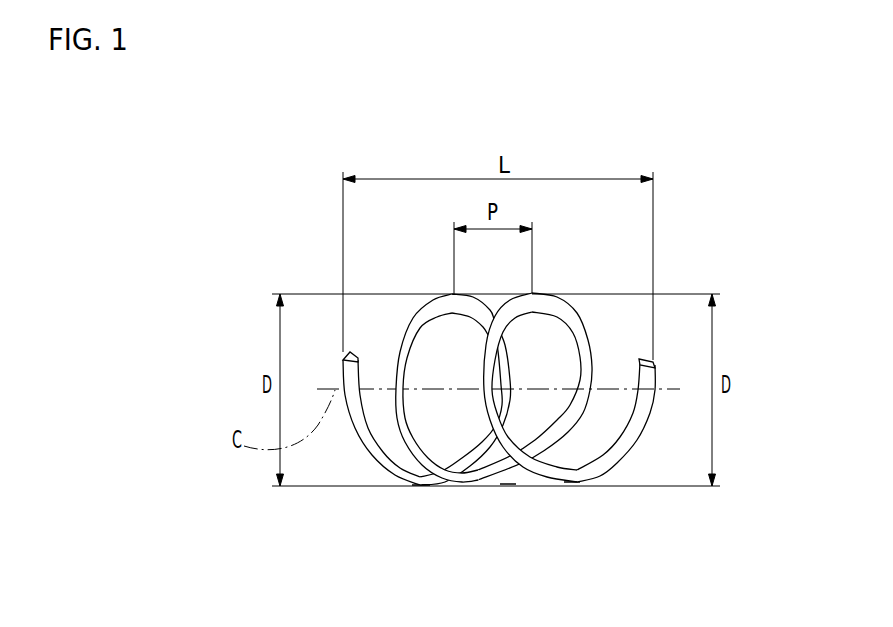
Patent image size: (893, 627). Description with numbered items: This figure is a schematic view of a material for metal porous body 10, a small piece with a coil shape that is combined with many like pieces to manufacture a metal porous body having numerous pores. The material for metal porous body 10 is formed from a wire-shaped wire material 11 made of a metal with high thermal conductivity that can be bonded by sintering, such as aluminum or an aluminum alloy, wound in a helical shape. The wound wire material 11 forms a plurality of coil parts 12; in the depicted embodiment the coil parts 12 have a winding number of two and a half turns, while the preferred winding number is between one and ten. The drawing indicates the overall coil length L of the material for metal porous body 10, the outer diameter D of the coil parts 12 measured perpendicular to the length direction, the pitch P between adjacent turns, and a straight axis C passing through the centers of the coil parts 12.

The material for metal porous body 10 is at (622, 313).
The wire material 11 is at (346, 369).
The coil parts 12 is at (421, 478).